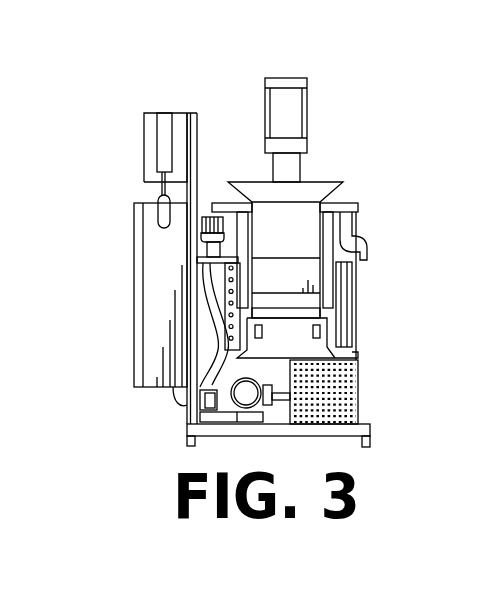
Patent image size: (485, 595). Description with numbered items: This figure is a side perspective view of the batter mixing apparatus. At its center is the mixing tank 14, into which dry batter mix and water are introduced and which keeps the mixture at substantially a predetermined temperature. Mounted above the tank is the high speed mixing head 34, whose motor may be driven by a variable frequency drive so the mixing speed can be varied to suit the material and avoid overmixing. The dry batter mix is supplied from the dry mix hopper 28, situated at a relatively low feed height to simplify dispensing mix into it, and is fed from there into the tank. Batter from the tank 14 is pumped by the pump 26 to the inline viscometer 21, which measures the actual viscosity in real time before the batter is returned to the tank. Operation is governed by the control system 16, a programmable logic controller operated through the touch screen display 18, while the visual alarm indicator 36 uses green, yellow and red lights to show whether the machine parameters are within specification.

The mixing tank 14 is at (343, 318).
The control system 16 is at (157, 290).
The touch screen display 18 is at (152, 145).
The inline viscometer 21 is at (205, 216).
The pump 26 is at (240, 410).
The dry mix hopper 28 is at (308, 212).
The mixing head 34 is at (290, 95).
The visual alarm indicator 36 is at (161, 116).